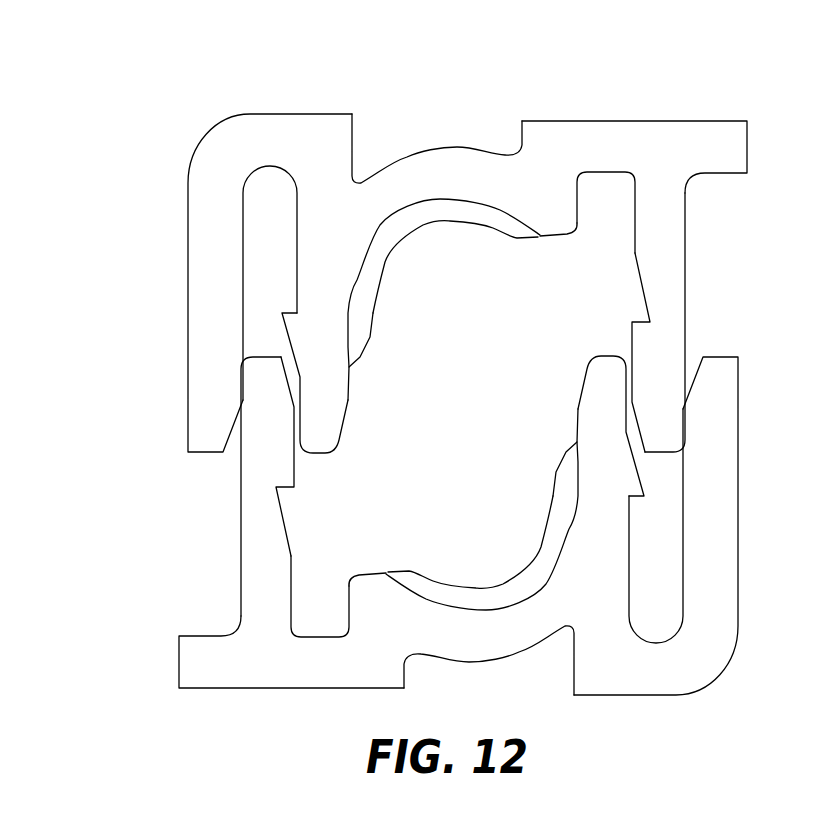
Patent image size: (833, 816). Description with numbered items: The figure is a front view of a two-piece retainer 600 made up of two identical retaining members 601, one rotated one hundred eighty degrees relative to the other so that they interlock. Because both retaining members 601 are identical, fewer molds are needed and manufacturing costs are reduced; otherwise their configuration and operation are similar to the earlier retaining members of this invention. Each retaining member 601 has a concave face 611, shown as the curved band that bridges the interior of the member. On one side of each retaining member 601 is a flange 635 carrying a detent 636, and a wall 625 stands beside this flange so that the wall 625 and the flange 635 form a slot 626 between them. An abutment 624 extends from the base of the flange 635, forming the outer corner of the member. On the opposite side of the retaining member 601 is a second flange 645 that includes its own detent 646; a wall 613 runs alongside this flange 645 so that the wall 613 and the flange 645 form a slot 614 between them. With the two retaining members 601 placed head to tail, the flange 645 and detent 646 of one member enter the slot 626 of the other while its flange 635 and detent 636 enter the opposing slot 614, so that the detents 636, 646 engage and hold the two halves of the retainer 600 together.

The two-piece retainer 600 is at (137, 84).
The retaining member 601 is at (410, 153).
The concave face 611 is at (445, 217).
The wall 613 is at (190, 272).
The slot 614 is at (260, 190).
The abutment 624 is at (717, 167).
The wall 625 is at (569, 237).
The slot 626 is at (607, 220).
The flange 635 is at (670, 350).
The detent 636 is at (635, 322).
The flange 645 is at (352, 370).
The detent 646 is at (283, 320).